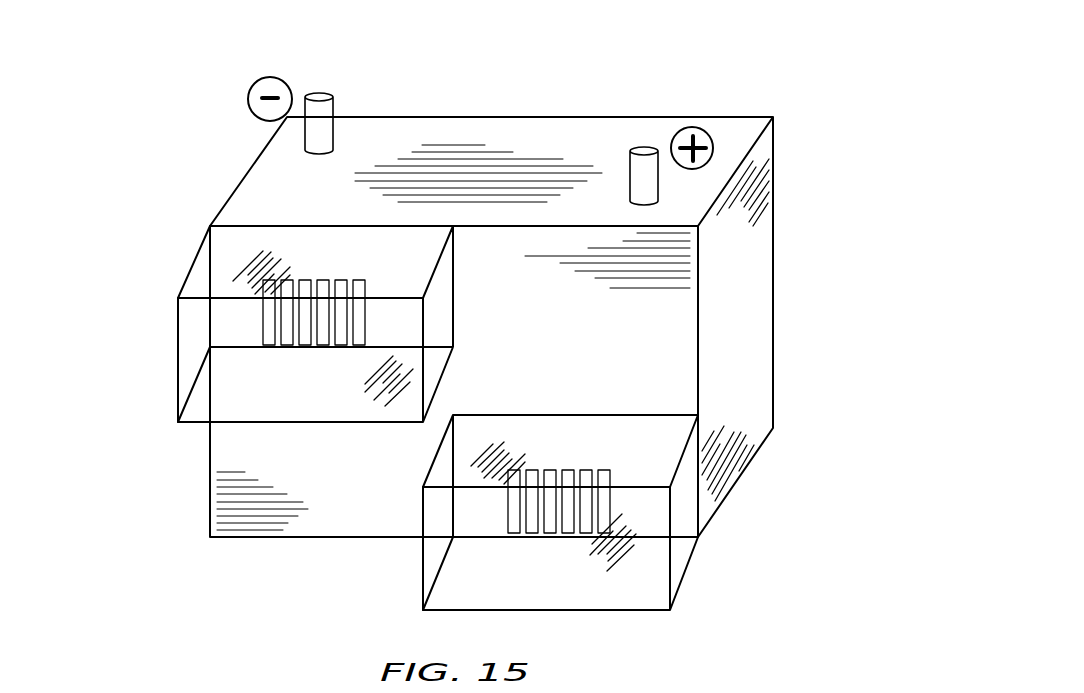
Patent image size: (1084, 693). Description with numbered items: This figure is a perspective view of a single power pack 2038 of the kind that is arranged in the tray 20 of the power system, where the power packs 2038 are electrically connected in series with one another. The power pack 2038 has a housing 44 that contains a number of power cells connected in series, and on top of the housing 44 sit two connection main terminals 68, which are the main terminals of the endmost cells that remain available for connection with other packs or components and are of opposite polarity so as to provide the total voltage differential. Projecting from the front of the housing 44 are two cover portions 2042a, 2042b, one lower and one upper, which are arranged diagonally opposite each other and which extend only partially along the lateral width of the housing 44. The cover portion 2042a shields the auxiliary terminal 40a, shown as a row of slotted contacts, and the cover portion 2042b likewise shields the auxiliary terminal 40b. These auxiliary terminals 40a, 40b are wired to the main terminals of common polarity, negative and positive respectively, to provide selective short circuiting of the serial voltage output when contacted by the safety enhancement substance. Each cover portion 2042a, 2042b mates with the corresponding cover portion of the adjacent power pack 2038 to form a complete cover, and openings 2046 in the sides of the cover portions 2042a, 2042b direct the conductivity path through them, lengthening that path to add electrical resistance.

The power pack 2038 is at (486, 345).
The tray 20 is at (528, 366).
The housing 44 is at (773, 235).
The connection main terminal 68 is at (320, 107).
The cover portion 2042a is at (513, 548).
The cover portion 2042b is at (275, 285).
The auxiliary terminal 40a is at (538, 515).
The auxiliary terminal 40b is at (276, 330).
The opening 2046 is at (165, 343).